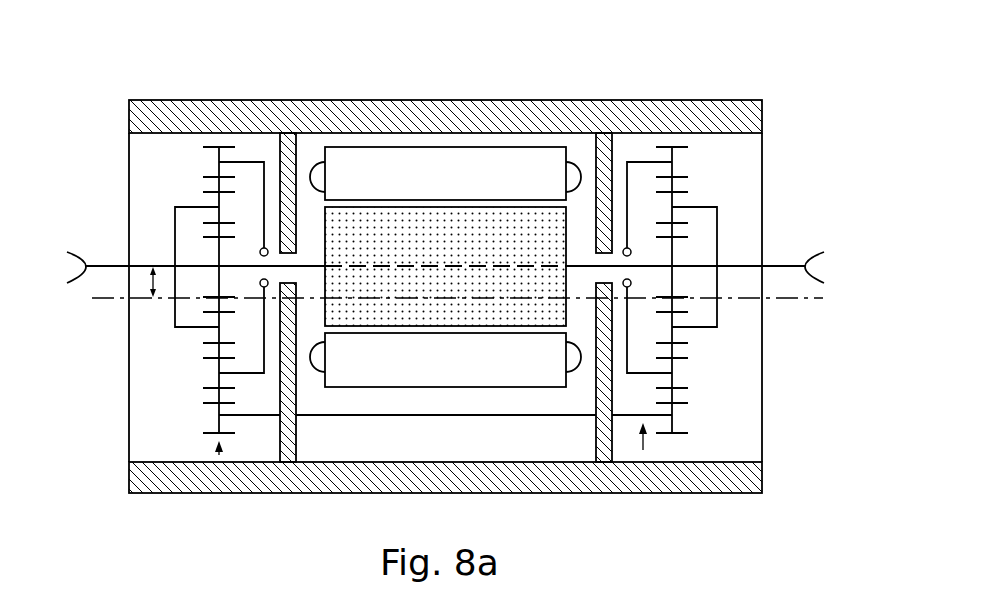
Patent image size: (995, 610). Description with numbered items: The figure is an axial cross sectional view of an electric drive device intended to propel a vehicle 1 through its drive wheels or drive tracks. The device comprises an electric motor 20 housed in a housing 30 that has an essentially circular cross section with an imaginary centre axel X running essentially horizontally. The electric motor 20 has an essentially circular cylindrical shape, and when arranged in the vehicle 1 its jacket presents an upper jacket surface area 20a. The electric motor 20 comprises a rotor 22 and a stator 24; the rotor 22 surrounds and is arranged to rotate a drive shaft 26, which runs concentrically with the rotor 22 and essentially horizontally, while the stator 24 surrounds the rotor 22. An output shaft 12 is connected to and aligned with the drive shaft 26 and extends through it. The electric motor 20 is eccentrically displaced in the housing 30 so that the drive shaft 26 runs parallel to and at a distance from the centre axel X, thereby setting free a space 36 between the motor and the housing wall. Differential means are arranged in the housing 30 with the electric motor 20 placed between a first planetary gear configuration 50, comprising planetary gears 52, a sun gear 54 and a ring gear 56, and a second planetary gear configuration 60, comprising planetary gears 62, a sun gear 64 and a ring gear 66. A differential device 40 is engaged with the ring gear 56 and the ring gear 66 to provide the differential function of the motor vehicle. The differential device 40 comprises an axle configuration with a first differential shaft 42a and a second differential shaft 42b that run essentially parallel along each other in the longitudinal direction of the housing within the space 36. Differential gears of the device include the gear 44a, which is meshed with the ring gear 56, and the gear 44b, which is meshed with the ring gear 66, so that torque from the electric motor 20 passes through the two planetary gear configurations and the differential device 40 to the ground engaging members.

The vehicle 1 is at (618, 75).
The output shaft 12 is at (105, 266).
The electric motor 20 is at (445, 140).
The upper jacket surface area 20a is at (387, 147).
The rotor 22 is at (460, 318).
The stator 24 is at (385, 386).
The drive shaft 26 is at (537, 263).
The housing 30 is at (328, 98).
The space 36 is at (464, 436).
The differential device 40 is at (219, 455).
The first differential shaft 42a is at (617, 417).
The second differential shaft 42b is at (250, 417).
The differential gear 44a is at (716, 470).
The differential gear 44b is at (218, 478).
The first planetary gear configuration 50 is at (190, 183).
The planetary gears 52 is at (217, 377).
The sun gear 54 is at (219, 335).
The ring gear 56 is at (213, 423).
The second planetary gear configuration 60 is at (692, 169).
The planetary gears 62 is at (672, 332).
The sun gear 64 is at (672, 270).
The ring gear 66 is at (672, 425).
The centre axel X is at (102, 298).